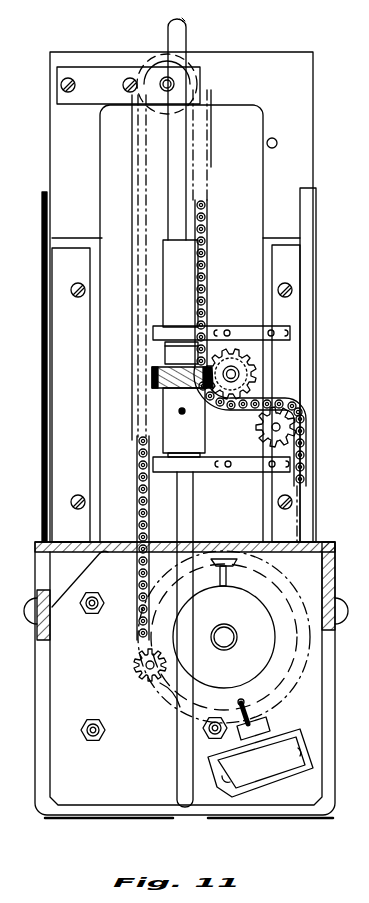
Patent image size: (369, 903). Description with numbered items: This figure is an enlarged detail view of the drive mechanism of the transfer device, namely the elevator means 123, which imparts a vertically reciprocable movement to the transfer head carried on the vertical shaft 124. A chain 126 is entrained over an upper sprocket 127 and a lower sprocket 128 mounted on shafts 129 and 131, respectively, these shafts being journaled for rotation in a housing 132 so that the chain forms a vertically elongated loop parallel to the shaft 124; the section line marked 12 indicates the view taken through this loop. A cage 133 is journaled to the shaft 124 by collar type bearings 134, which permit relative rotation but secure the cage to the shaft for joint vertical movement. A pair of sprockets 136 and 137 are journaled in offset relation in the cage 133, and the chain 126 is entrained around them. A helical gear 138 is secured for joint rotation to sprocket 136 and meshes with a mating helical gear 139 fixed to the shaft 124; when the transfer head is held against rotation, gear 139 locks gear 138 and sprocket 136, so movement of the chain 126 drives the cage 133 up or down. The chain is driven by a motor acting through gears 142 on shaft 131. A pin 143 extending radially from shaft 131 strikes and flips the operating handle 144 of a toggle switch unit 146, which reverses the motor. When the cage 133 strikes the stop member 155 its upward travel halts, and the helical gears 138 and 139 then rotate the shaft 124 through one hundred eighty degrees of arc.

The section line 12 is at (292, 90).
The elevator means 123 is at (80, 420).
The vertical shaft 124 is at (186, 38).
The chain 126 is at (209, 226).
The sprocket 127 is at (160, 62).
The sprocket 128 is at (292, 646).
The shaft 129 is at (172, 84).
The shaft 131 is at (220, 644).
The housing 132 is at (59, 159).
The cage 133 is at (248, 328).
The collar type bearings 134 is at (163, 345).
The sprocket 136 is at (249, 361).
The sprocket 137 is at (289, 427).
The helical gear 138 is at (246, 375).
The helical gear 139 is at (150, 381).
The gears 142 is at (150, 655).
The pin 143 is at (215, 582).
The operating handle 144 is at (252, 712).
The toggle switch unit 146 is at (303, 737).
The stop member 155 is at (278, 143).